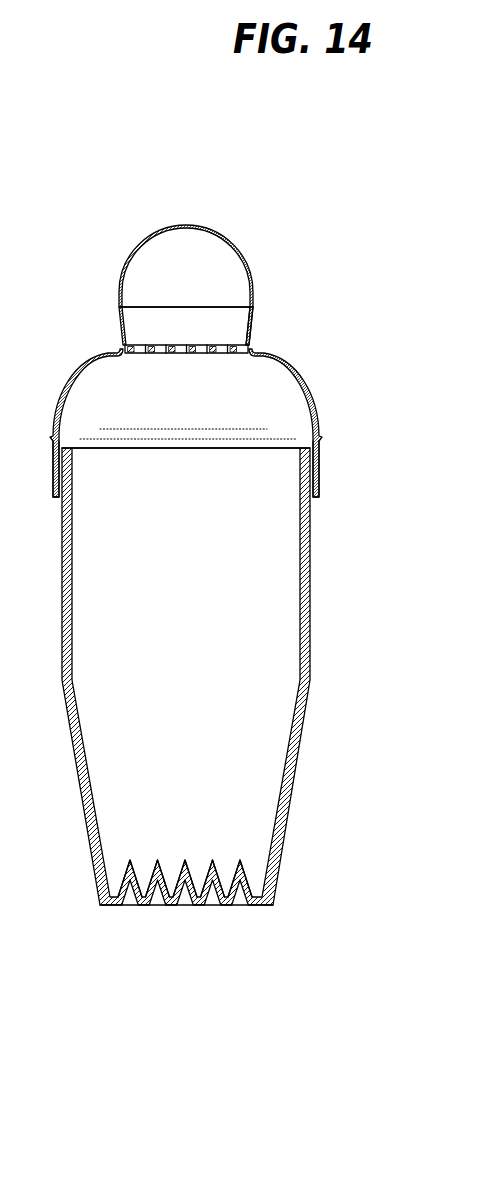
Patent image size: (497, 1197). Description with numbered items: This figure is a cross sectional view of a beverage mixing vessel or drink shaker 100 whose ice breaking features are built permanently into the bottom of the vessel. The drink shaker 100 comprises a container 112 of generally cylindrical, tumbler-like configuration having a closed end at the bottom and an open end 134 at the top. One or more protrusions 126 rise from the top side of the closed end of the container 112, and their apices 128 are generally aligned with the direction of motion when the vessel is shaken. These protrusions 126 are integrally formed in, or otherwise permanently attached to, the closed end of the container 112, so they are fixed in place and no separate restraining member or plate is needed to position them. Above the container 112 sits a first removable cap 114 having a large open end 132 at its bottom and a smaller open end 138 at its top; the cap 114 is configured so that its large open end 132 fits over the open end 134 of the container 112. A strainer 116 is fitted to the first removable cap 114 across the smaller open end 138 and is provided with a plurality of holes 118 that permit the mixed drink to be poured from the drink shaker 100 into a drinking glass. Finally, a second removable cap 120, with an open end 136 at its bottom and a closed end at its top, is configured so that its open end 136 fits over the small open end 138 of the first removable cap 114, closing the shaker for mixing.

The drink shaker 100 is at (288, 187).
The container 112 is at (62, 578).
The first removable cap 114 is at (84, 370).
The strainer 116 is at (150, 345).
The holes 118 is at (185, 343).
The second removable cap 120 is at (118, 290).
The protrusions 126 is at (120, 885).
The apices 128 is at (130, 861).
The large open end 132 is at (314, 498).
The open end 134 is at (299, 449).
The open end 136 is at (255, 331).
The smaller open end 138 is at (241, 314).